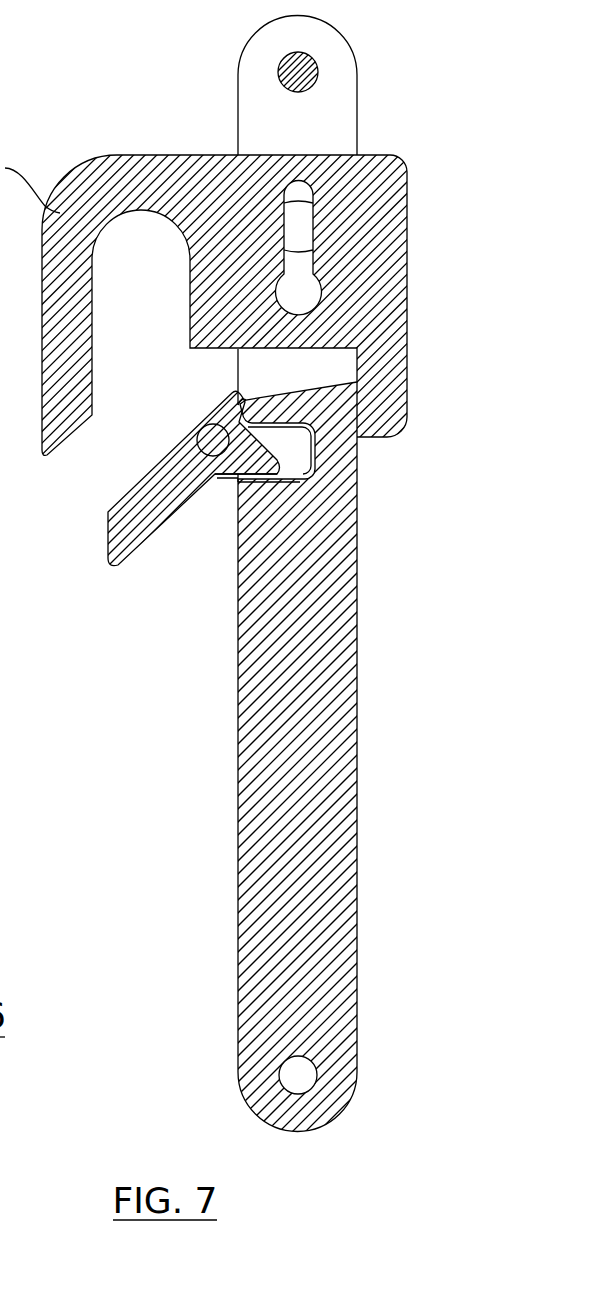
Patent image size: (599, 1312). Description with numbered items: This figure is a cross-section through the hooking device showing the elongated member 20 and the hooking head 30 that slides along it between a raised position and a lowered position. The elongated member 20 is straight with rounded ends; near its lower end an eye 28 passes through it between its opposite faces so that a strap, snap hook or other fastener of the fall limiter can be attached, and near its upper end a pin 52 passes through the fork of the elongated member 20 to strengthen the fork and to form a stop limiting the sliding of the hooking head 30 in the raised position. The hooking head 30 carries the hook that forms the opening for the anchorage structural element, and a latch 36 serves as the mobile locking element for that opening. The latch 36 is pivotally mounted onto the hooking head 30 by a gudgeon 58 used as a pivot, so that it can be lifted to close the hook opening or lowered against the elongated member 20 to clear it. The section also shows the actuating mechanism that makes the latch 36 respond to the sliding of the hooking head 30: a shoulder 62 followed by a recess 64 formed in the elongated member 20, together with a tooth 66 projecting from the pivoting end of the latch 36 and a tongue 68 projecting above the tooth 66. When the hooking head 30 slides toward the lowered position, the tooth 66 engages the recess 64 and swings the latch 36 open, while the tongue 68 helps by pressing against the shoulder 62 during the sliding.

The elongated member 20 is at (378, 753).
The eye 28 is at (282, 1079).
The hooking head 30 is at (74, 135).
The latch 36 is at (112, 548).
The pin 52 is at (315, 63).
The gudgeon 58 is at (204, 429).
The shoulder 62 is at (244, 400).
The recess 64 is at (320, 450).
The tooth 66 is at (248, 460).
The tongue 68 is at (247, 408).